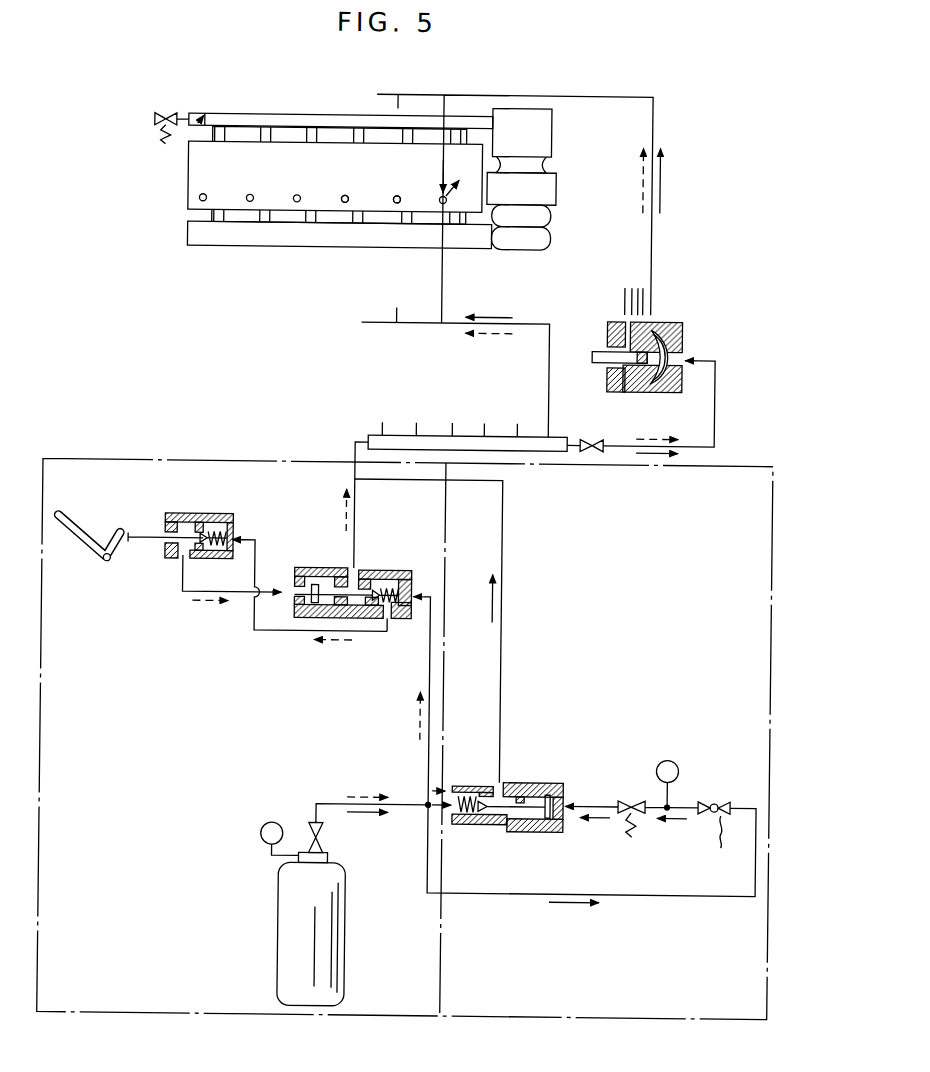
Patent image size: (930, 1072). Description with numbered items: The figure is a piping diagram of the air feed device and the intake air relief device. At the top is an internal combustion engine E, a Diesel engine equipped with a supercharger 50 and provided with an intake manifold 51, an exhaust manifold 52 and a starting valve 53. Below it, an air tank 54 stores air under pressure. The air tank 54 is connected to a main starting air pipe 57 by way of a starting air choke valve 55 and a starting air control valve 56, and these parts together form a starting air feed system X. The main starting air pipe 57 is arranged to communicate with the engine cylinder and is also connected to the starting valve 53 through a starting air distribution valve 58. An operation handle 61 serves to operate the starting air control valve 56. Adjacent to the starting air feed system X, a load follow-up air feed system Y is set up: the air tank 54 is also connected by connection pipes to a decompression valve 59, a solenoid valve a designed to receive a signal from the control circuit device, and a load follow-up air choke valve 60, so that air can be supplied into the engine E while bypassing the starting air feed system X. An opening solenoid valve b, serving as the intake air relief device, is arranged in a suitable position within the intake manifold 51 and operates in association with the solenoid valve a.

The supercharger 50 is at (548, 133).
The intake manifold 51 is at (297, 116).
The exhaust manifold 52 is at (293, 248).
The starting valve 53 is at (392, 197).
The air tank 54 is at (283, 930).
The starting air choke valve 55 is at (323, 569).
The starting air control valve 56 is at (204, 516).
The main starting air pipe 57 is at (400, 436).
The starting air distribution valve 58 is at (668, 320).
The decompression valve 59 is at (720, 800).
The load follow-up air choke valve 60 is at (552, 831).
The operation handle 61 is at (90, 534).
The solenoid valve a is at (640, 814).
The opening solenoid valve b is at (157, 118).
The internal combustion engine E is at (185, 179).
The starting air feed system X is at (44, 795).
The load follow-up air feed system Y is at (775, 602).